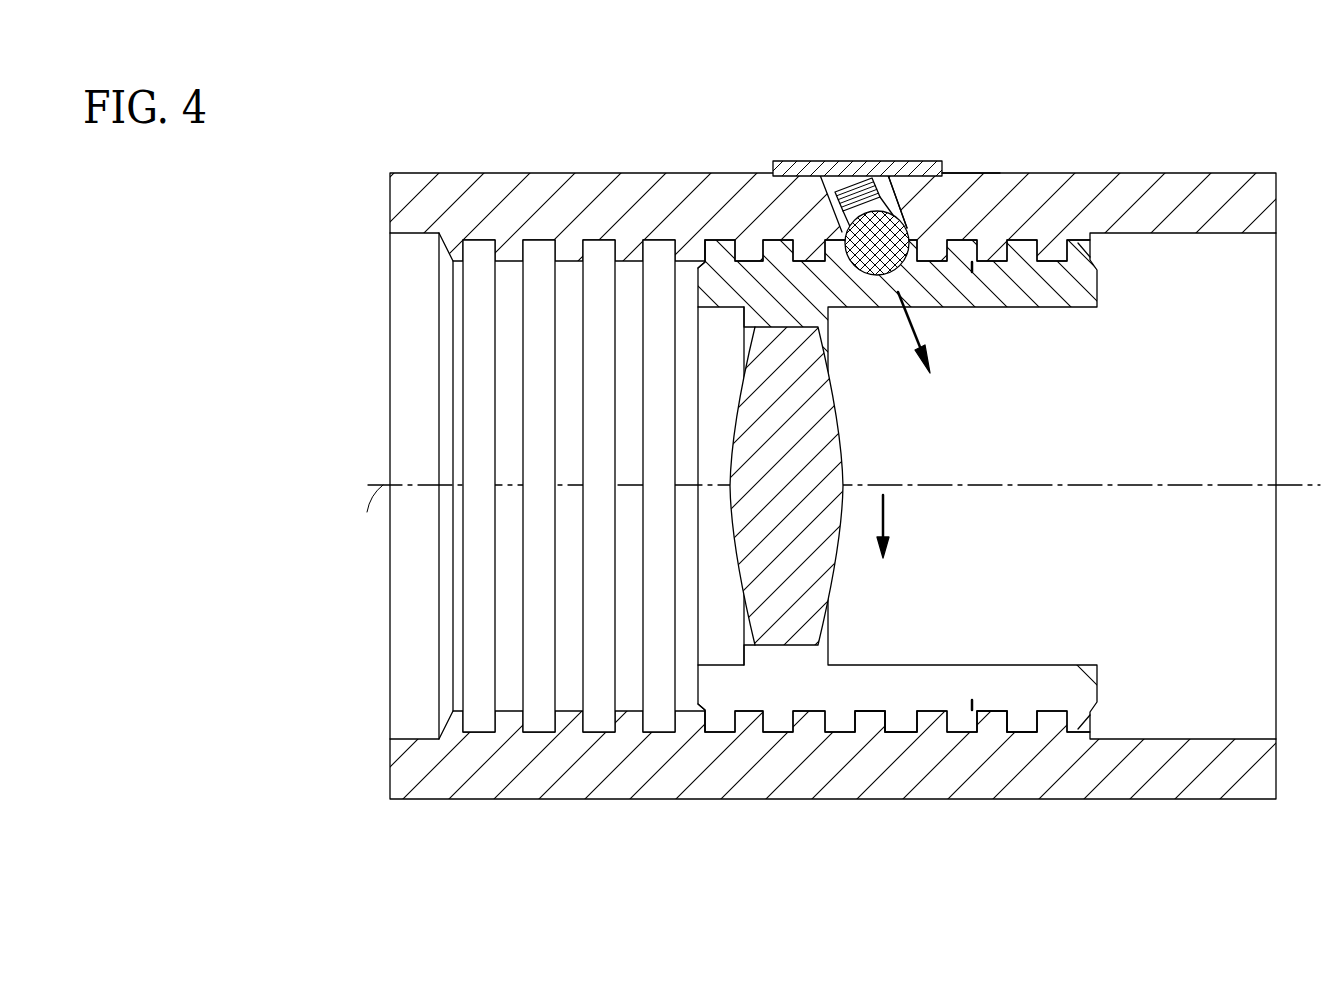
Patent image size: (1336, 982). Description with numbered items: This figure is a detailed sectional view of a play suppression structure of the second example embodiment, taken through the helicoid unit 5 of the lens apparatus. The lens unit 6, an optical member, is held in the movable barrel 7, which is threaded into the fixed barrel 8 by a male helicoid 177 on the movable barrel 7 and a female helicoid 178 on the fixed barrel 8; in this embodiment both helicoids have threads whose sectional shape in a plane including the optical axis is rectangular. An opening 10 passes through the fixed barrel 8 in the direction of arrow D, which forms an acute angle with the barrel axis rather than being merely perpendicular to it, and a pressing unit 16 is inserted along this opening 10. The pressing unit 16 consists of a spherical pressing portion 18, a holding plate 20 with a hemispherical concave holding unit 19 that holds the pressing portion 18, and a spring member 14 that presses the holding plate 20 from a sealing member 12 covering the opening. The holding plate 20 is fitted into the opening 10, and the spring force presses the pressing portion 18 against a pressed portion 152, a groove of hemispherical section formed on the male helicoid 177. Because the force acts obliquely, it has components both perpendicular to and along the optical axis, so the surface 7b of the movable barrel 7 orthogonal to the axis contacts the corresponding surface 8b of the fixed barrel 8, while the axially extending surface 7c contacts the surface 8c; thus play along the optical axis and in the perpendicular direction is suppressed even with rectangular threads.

The helicoid unit 5 is at (362, 113).
The lens unit 6 is at (788, 640).
The movable barrel 7 is at (1027, 288).
The surface orthogonal to the optical axis direction of the movable barrel 7b is at (900, 722).
The surface along the optical axis direction of the movable barrel 7c is at (990, 722).
The fixed barrel 8 is at (1180, 192).
The surface orthogonal to the optical axis direction of the fixed barrel 8b is at (878, 738).
The surface along the optical axis direction of the fixed barrel 8c is at (990, 718).
The opening 10 is at (832, 222).
The sealing member 12 is at (843, 166).
The spring member 14 is at (888, 168).
The pressing unit 16 is at (875, 124).
The pressing portion 18 is at (971, 143).
The holding unit 19 is at (868, 277).
The holding plate 20 is at (828, 215).
The pressed portion 152 is at (900, 272).
The male helicoid 177 is at (704, 243).
The female helicoid 178 is at (575, 238).